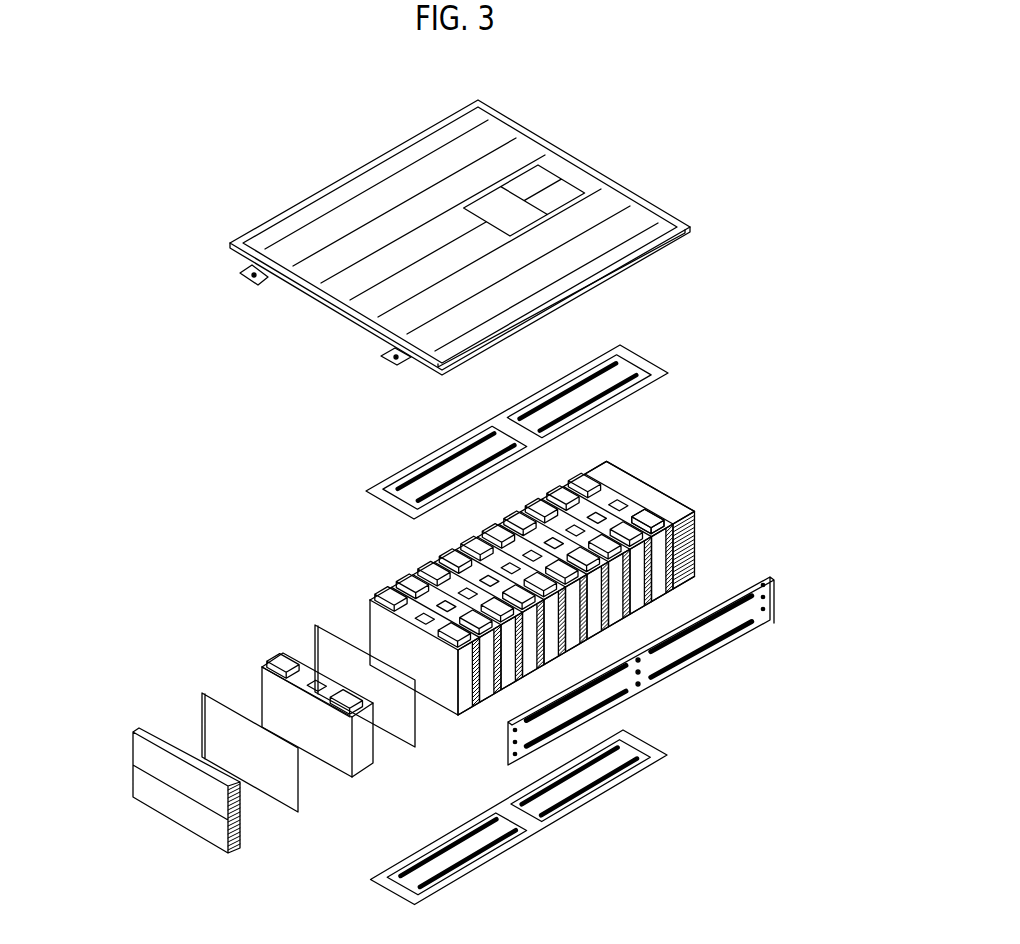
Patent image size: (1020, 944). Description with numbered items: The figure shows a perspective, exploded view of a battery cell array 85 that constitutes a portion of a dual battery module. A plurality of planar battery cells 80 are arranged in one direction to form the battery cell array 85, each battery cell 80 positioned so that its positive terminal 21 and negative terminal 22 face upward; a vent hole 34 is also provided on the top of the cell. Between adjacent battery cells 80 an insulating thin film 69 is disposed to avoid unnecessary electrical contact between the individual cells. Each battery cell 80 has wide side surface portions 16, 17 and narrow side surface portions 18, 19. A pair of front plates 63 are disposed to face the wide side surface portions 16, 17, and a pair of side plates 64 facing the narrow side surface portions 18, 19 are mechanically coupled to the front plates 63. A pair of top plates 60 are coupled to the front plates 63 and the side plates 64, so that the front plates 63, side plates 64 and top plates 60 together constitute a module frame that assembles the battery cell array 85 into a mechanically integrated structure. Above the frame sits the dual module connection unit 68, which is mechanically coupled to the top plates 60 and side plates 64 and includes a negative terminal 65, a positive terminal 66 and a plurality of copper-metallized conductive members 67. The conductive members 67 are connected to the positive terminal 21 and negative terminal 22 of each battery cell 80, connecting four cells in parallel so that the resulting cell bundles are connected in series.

The wide side surface portion 16 is at (307, 734).
The wide side surface portion 17 is at (377, 740).
The narrow side surface portion 18 is at (363, 760).
The narrow side surface portion 19 is at (257, 690).
The positive terminal 21 is at (557, 563).
The negative terminal 22 is at (593, 477).
The vent hole 34 is at (633, 493).
The top plate 60 is at (368, 489).
The front plate 63 is at (700, 548).
The side plate 64 is at (660, 663).
The negative terminal 65 is at (390, 362).
The positive terminal 66 is at (252, 283).
The conductive member 67 is at (413, 160).
The dual module connection unit 68 is at (250, 215).
The insulating thin film 69 is at (200, 722).
The battery cell 80 is at (600, 456).
The battery cell array 85 is at (461, 609).